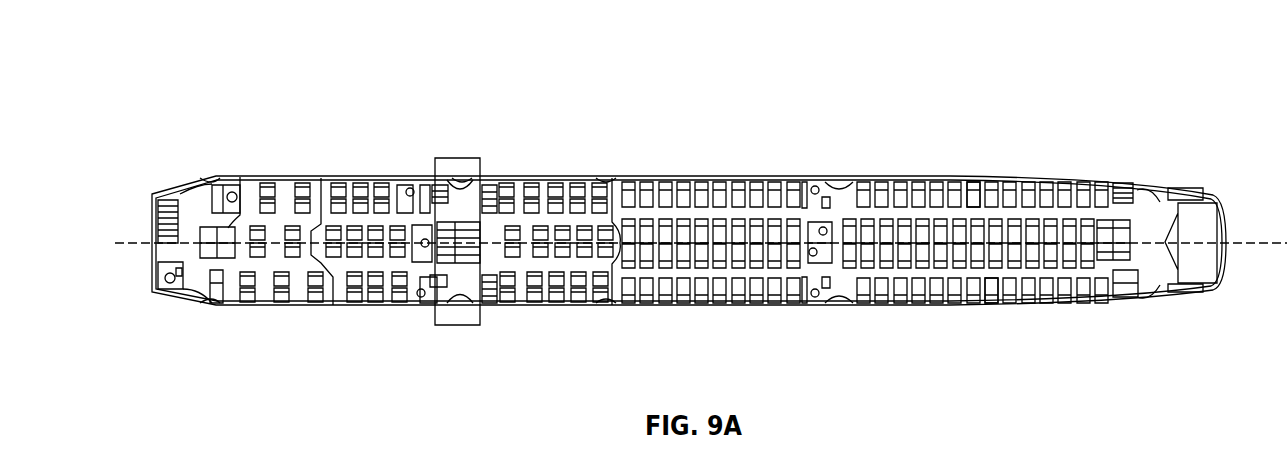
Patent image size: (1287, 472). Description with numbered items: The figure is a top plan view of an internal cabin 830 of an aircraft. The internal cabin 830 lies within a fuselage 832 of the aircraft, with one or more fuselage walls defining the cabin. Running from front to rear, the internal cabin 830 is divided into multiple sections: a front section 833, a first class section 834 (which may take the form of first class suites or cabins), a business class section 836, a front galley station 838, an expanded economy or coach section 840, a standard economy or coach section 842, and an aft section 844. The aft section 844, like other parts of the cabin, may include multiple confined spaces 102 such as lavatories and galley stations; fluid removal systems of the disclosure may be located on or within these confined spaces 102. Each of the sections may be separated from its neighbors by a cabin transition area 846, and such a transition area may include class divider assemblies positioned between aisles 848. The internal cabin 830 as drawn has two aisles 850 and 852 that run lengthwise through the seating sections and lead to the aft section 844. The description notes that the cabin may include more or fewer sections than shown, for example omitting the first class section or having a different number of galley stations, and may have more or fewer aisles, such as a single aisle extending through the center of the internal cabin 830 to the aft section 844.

The internal cabin 830 is at (274, 93).
The fuselage 832 is at (570, 115).
The front section 833 is at (203, 318).
The first class section 834 is at (288, 306).
The business class section 836 is at (352, 177).
The front galley station 838 is at (460, 326).
The expanded economy or coach section 840 is at (546, 308).
The standard economy or coach section 842 is at (661, 177).
The aft section 844 is at (1160, 200).
The cabin transition area 846 is at (210, 177).
The aisles 848 is at (447, 212).
The aisle 850 is at (977, 212).
The aisle 852 is at (993, 275).
The confined spaces 102 is at (424, 242).